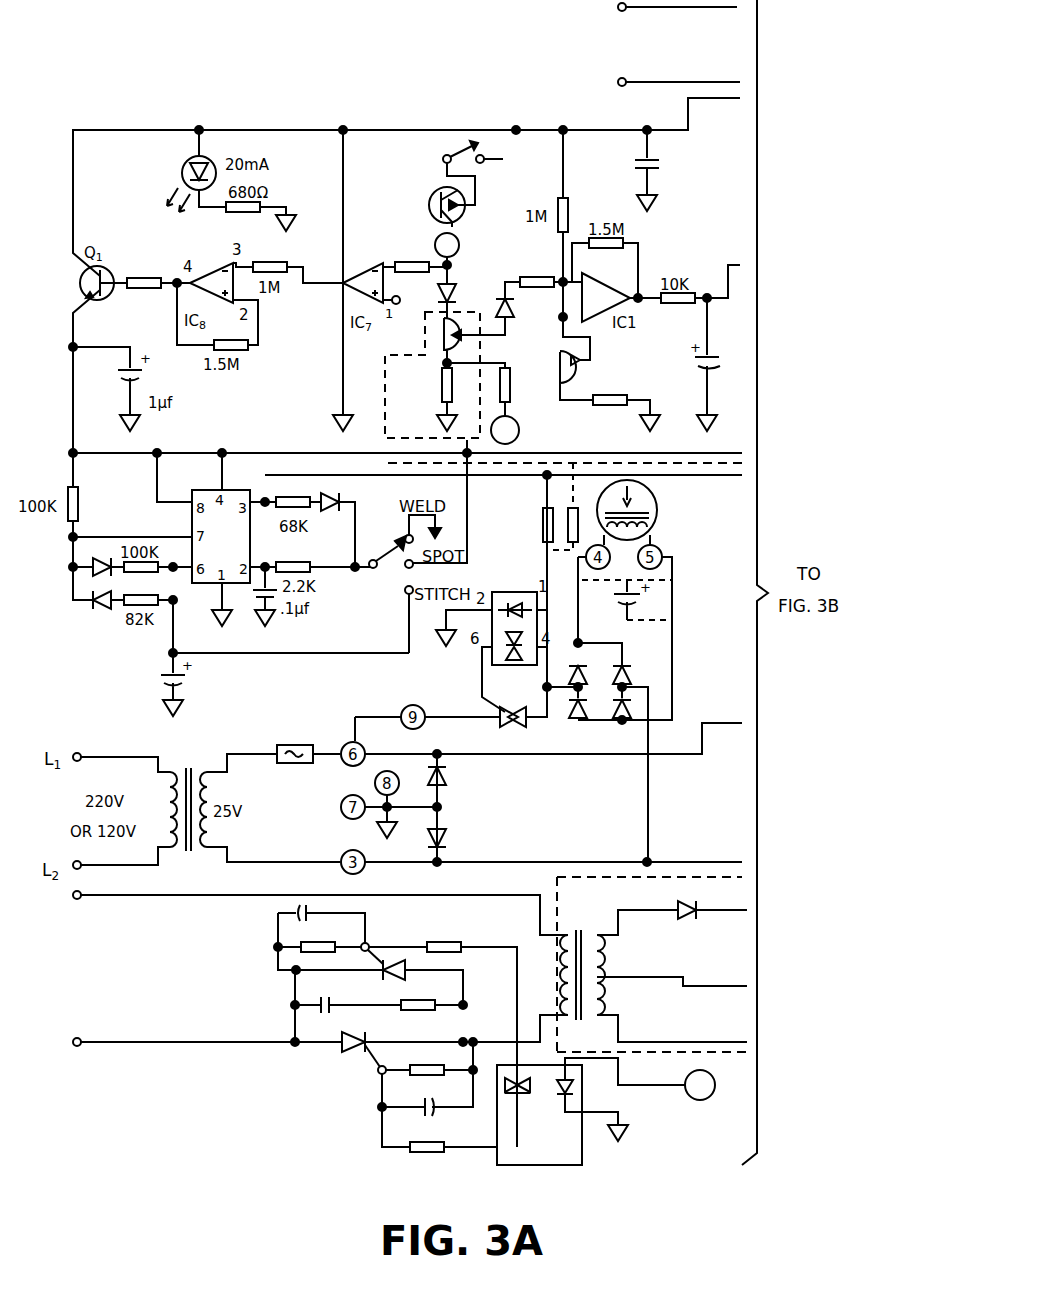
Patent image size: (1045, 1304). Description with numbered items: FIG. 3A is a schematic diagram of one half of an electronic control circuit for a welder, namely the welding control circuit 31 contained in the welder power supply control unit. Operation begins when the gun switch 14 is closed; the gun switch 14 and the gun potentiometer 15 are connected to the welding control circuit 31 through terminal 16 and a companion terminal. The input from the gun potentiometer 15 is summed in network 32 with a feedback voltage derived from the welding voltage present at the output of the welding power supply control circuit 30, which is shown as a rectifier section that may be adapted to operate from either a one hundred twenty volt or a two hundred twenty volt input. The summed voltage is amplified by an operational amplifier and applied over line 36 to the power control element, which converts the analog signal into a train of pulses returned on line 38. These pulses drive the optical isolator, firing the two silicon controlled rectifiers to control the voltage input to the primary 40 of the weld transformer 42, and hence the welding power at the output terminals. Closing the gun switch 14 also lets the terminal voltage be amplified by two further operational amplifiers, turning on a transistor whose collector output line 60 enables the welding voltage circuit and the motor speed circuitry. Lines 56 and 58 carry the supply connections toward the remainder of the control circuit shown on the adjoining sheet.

The gun switch 14 is at (458, 146).
The gun potentiometer 15 is at (441, 202).
The terminal 16 is at (501, 159).
The welding power supply control circuit 30 is at (738, 1058).
The welding control circuit 31 is at (192, 1110).
The network 32 is at (392, 378).
The line 36 is at (741, 259).
The line 38 is at (640, 1090).
The primary 40 is at (567, 969).
The weld transformer 42 is at (603, 975).
The line 56 is at (720, 727).
The line 58 is at (710, 860).
The collector output line 60 is at (708, 97).